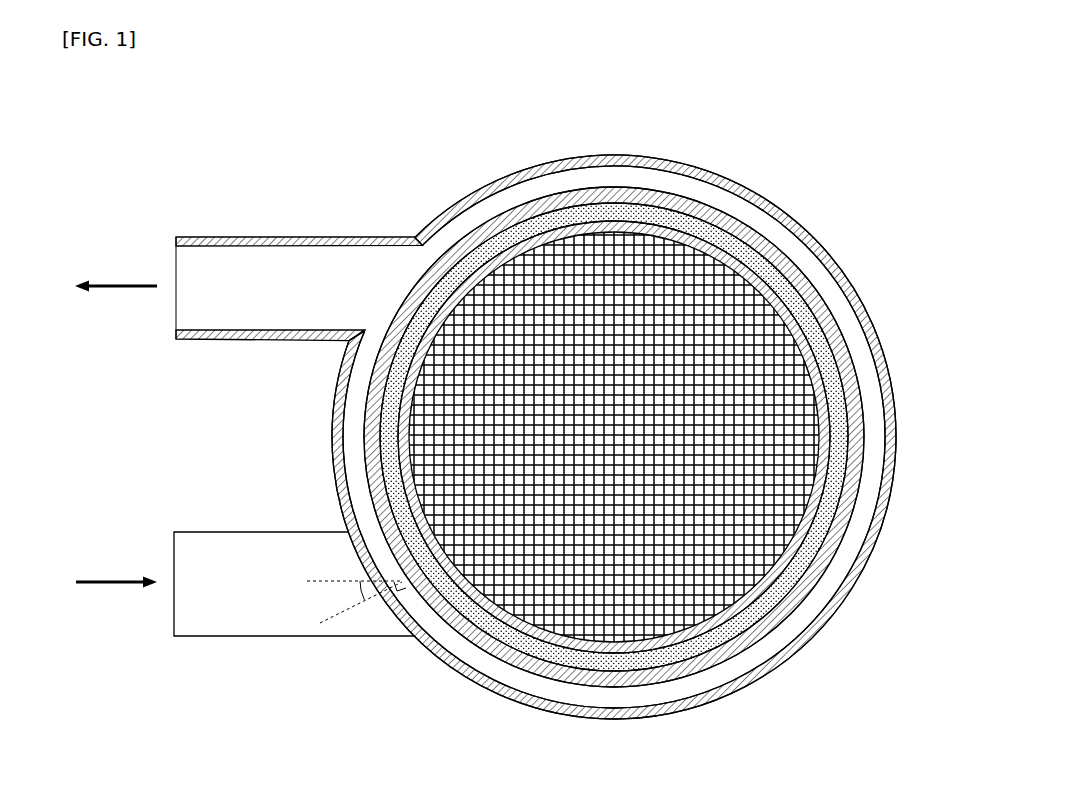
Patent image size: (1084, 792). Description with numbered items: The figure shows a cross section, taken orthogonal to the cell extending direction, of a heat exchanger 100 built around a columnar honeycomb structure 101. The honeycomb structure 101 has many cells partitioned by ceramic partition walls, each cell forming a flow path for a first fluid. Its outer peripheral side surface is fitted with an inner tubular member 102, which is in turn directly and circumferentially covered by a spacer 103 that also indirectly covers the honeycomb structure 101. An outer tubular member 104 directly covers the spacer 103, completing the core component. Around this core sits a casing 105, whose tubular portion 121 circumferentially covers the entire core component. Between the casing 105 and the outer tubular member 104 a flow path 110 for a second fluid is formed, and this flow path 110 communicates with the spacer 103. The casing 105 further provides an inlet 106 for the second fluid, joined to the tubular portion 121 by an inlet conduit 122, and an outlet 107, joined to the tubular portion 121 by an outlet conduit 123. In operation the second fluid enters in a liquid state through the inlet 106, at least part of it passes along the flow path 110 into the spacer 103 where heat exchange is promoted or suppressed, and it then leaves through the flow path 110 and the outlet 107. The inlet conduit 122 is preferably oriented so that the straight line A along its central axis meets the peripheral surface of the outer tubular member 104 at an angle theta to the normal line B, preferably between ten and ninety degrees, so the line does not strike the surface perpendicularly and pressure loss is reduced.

The heat exchanger 100 is at (713, 126).
The columnar honeycomb structure 101 is at (613, 240).
The inner tubular member 102 is at (555, 230).
The spacer 103 is at (495, 230).
The outer tubular member 104 is at (447, 258).
The casing 105 is at (833, 243).
The inlet 106 is at (174, 565).
The outlet 107 is at (176, 278).
The flow path 110 is at (750, 210).
The tubular portion 121 is at (868, 316).
The inlet conduit 122 is at (265, 531).
The outlet conduit 123 is at (248, 237).